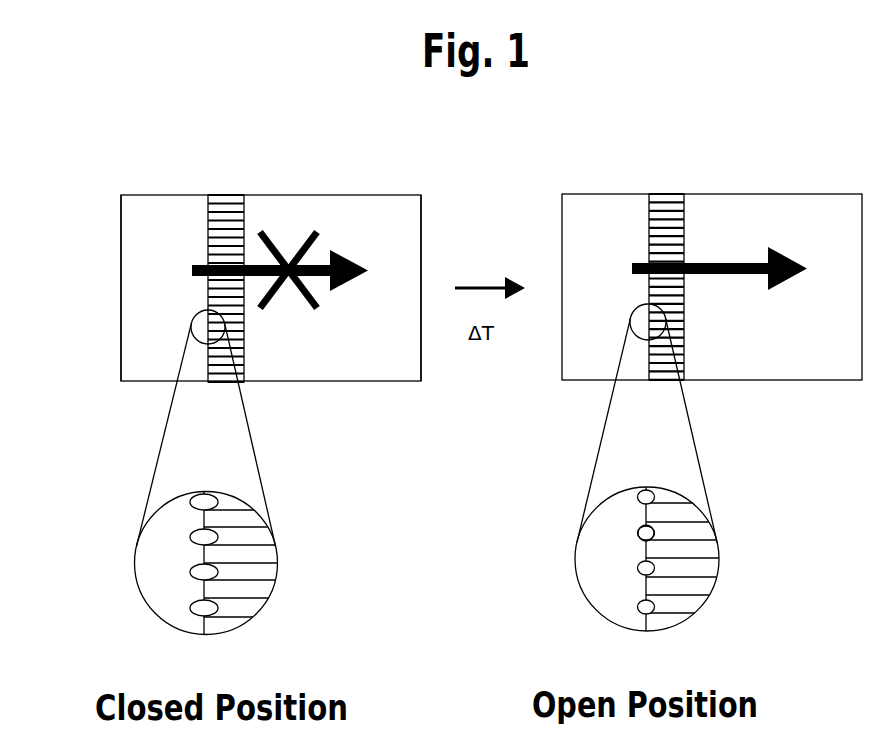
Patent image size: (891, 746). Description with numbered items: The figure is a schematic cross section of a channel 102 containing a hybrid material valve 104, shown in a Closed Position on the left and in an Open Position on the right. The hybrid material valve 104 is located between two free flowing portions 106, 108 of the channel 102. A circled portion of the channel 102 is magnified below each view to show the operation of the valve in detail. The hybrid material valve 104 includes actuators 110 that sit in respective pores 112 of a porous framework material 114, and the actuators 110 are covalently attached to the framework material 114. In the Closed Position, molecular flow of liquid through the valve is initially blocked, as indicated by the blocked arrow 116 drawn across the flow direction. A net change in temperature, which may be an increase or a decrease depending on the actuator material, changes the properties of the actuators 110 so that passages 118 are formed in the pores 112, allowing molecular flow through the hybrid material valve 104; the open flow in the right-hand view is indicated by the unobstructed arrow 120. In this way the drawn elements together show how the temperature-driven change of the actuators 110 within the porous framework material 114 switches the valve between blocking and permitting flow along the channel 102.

The channel 102 is at (208, 170).
The hybrid material valve 104 is at (224, 198).
The free flowing portion 106 is at (121, 243).
The free flowing portion 108 is at (421, 243).
The actuators 110 is at (190, 608).
The pores 112 is at (270, 572).
The porous framework material 114 is at (260, 587).
The blocked arrow 116 is at (287, 263).
The passages 118 is at (657, 525).
The open flow 120 is at (697, 258).